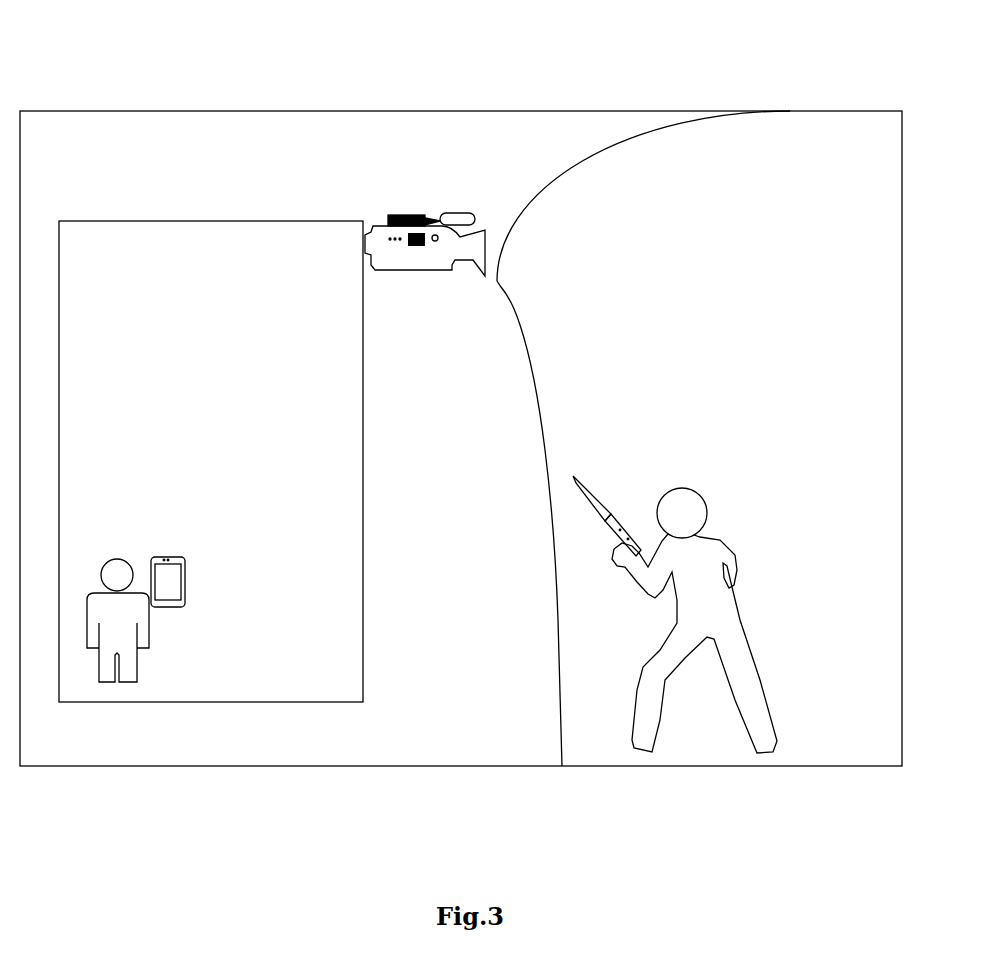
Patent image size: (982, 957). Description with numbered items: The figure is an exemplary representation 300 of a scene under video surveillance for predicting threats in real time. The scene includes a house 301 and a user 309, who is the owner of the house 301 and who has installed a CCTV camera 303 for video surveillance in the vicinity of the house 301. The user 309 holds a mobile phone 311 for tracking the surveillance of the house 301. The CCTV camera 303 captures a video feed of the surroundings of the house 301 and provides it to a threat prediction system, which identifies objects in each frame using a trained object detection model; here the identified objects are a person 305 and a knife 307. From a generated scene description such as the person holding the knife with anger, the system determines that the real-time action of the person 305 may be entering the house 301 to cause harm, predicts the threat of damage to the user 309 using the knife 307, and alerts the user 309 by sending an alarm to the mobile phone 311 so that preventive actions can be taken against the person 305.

The exemplary representation 300 is at (822, 70).
The house 301 is at (110, 218).
The CCTV camera 303 is at (403, 209).
The person 305 is at (685, 484).
The knife 307 is at (586, 470).
The user 309 is at (108, 554).
The mobile phone 311 is at (174, 549).